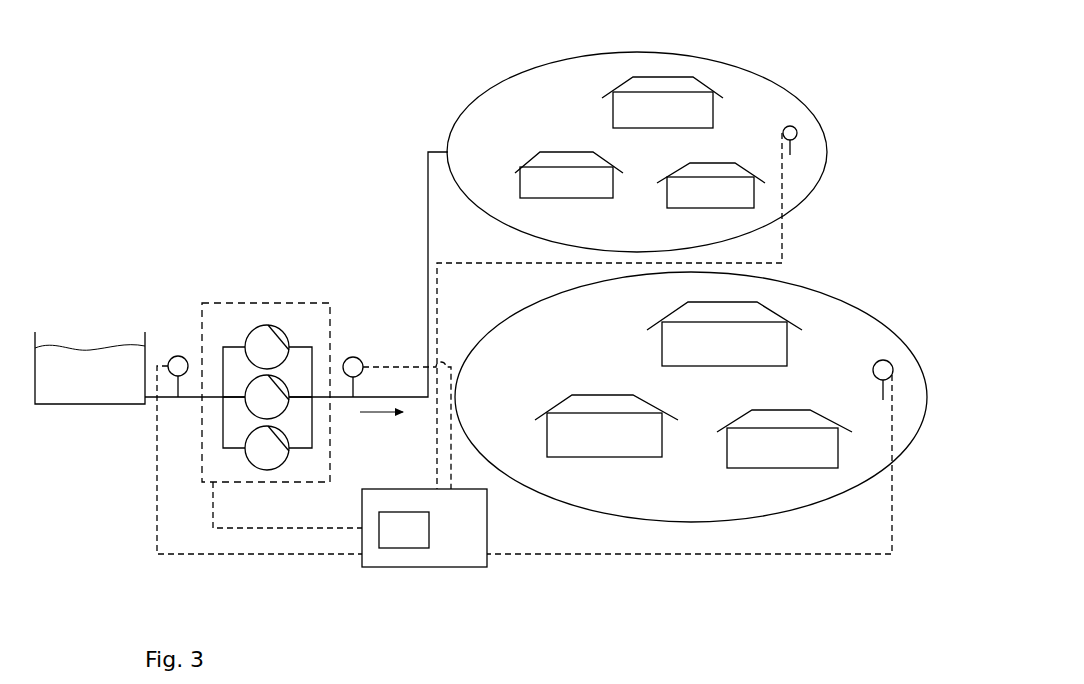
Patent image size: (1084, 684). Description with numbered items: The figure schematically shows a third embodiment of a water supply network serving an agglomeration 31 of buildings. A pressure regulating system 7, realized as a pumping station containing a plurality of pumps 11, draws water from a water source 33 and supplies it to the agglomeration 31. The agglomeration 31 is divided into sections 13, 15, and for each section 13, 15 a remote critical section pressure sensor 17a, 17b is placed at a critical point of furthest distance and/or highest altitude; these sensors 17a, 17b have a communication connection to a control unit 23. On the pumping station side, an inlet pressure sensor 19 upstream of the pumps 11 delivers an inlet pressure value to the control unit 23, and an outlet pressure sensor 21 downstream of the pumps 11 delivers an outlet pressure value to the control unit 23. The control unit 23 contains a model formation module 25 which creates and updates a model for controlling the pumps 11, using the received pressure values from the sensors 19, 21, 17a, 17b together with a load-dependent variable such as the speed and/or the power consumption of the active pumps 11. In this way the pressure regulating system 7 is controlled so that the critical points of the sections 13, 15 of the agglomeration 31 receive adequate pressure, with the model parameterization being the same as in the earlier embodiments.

The agglomeration of buildings 31 is at (394, 117).
The pressure regulating system 7 is at (277, 303).
The pumps 11 is at (248, 463).
The inlet pressure sensor 19 is at (189, 318).
The outlet pressure sensor 21 is at (381, 330).
The water source 33 is at (68, 405).
The control unit 23 is at (418, 567).
The model formation module 25 is at (429, 518).
The section 15 is at (562, 58).
The section 13 is at (793, 285).
The remote critical section pressure sensor 17a is at (897, 361).
The remote critical section pressure sensor 17b is at (810, 121).